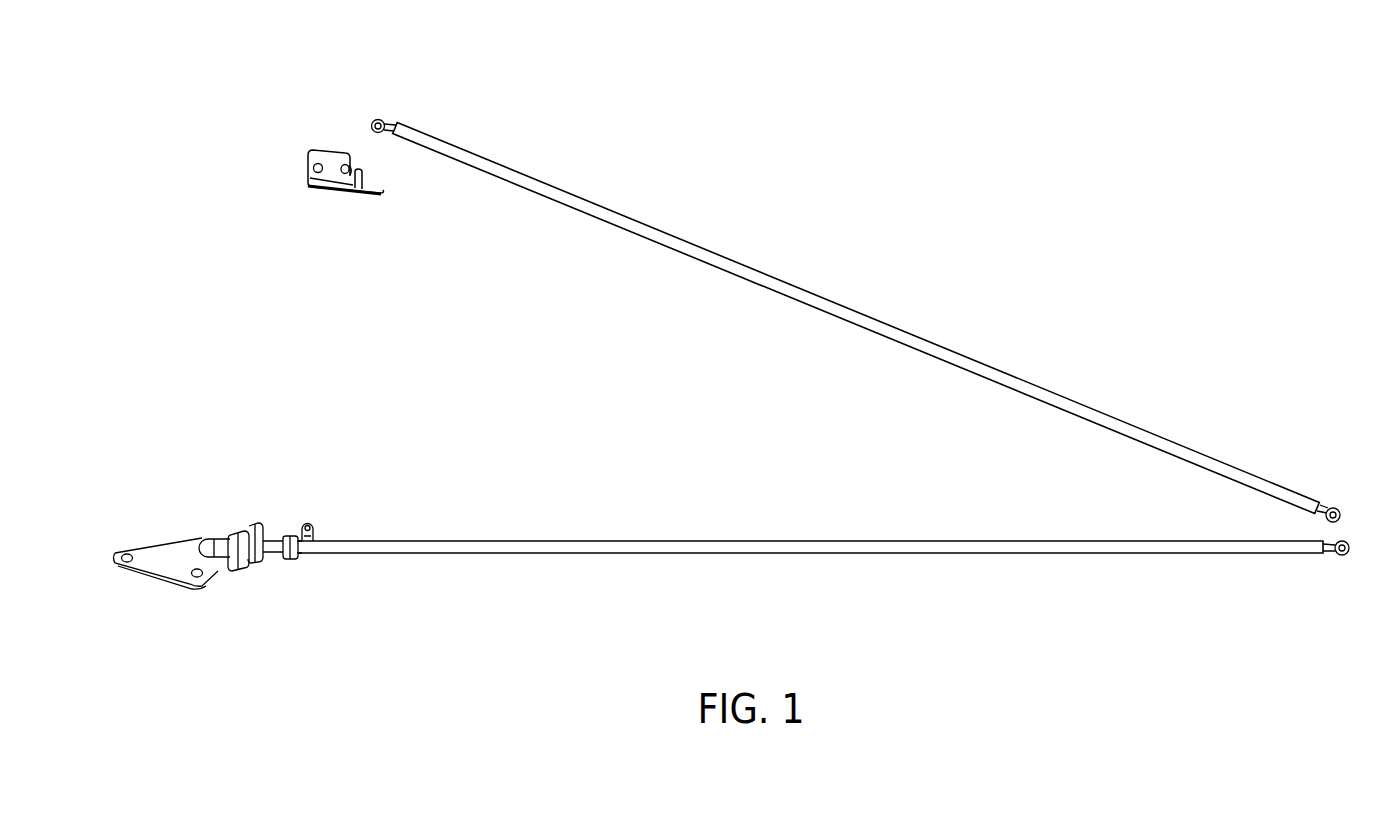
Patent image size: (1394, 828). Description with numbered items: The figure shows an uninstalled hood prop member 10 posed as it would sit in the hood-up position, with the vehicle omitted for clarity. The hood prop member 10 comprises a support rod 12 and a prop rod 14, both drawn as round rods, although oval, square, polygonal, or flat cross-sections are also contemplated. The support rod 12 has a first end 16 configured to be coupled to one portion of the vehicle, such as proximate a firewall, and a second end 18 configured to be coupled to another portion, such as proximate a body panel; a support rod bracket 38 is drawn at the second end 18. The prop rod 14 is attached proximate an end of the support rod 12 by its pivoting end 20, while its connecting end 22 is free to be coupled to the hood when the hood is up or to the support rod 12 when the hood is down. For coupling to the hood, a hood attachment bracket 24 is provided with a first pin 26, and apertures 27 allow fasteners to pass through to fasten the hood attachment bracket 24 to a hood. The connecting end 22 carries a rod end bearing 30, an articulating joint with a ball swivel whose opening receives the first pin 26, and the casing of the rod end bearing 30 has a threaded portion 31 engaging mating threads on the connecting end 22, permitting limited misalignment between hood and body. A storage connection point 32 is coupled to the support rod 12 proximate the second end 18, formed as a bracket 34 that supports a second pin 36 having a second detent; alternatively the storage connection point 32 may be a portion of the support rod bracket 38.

The hood prop member 10 is at (1285, 398).
The support rod 12 is at (1180, 549).
The prop rod 14 is at (1185, 453).
The first end 16 is at (1333, 569).
The second end 18 is at (247, 552).
The pivoting end 20 is at (1325, 490).
The connecting end 22 is at (379, 74).
The hood attachment bracket 24 is at (335, 152).
The first pin 26 is at (368, 186).
The apertures 27 is at (348, 158).
The rod end bearing 30 is at (375, 118).
The threaded portion 31 is at (392, 120).
The storage connection point 32 is at (292, 513).
The bracket 34 is at (287, 560).
The second pin 36 is at (314, 530).
The support rod bracket 38 is at (153, 557).